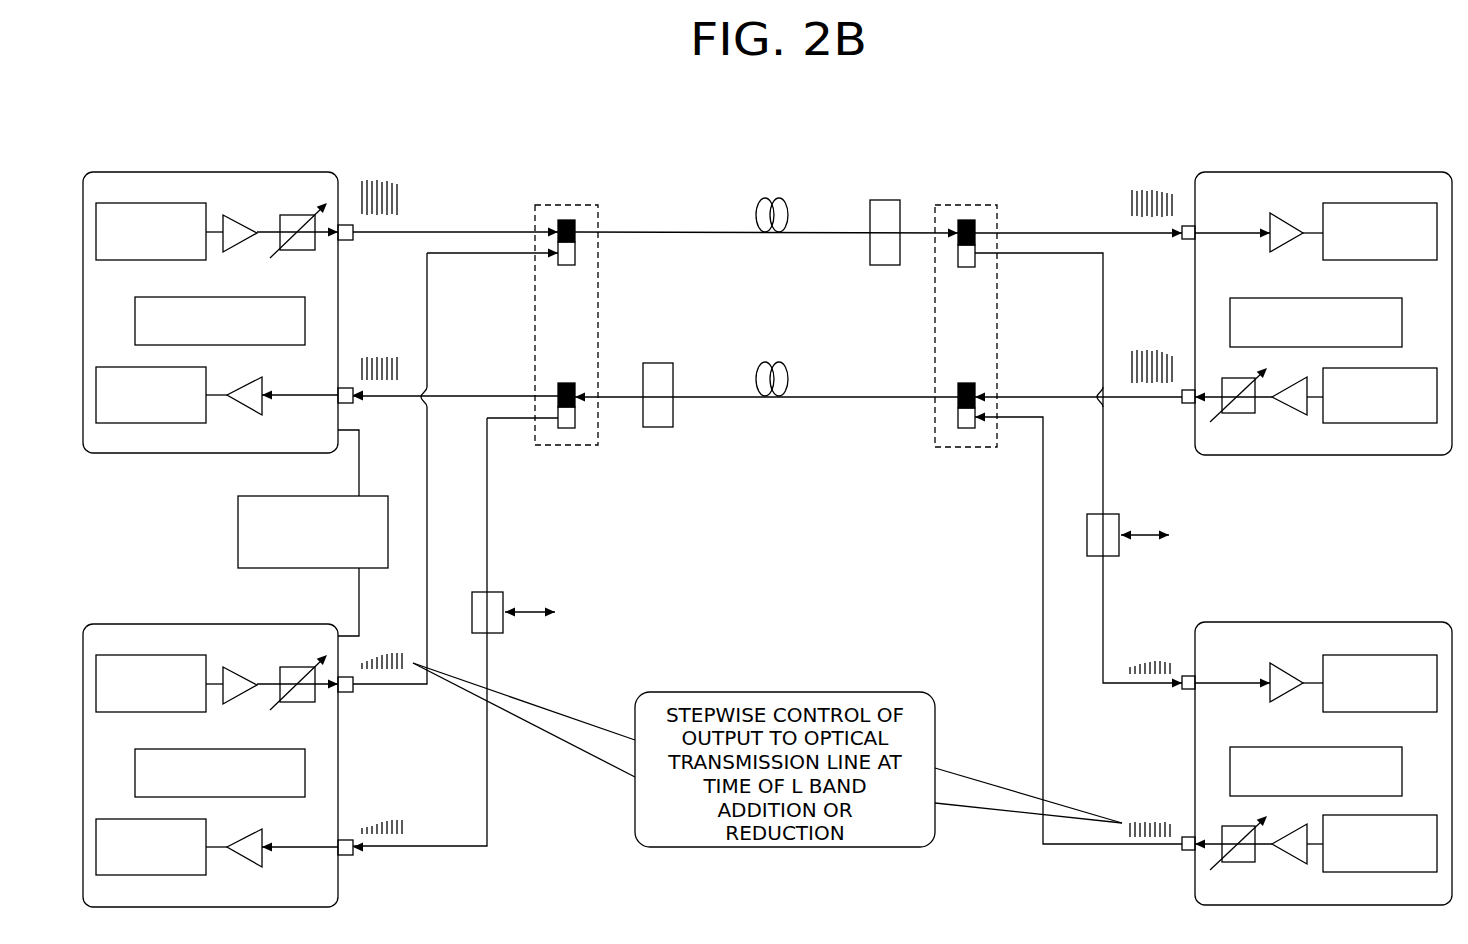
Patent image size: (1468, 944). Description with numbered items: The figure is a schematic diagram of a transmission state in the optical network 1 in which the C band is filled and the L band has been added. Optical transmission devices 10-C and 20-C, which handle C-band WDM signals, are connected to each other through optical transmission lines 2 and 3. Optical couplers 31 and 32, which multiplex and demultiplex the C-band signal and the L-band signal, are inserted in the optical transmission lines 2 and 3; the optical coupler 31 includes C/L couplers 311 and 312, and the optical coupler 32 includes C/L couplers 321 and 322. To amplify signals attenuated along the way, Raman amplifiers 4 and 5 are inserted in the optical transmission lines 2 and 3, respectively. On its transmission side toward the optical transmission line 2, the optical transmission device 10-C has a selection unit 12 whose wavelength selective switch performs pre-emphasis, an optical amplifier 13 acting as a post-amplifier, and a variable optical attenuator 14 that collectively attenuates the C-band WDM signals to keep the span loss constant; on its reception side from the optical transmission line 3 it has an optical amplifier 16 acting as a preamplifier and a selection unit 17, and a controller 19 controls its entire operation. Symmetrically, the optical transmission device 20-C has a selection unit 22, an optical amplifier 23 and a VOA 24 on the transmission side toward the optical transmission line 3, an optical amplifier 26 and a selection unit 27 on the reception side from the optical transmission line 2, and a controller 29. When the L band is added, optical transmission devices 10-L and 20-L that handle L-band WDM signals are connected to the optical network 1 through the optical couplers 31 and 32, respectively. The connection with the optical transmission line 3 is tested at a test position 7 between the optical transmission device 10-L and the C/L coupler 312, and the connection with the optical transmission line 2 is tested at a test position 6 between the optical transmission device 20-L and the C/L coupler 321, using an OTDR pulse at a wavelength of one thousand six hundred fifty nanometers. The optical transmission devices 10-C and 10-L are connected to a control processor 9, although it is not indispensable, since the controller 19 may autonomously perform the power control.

The optical network 1 is at (163, 69).
The optical transmission line 2 is at (686, 232).
The optical transmission line 3 is at (861, 397).
The Raman amplifier 4 is at (885, 200).
The Raman amplifier 5 is at (657, 363).
The test position 6 is at (1115, 514).
The test position 7 is at (500, 592).
The control processor 9 is at (238, 530).
The optical transmission device 10-C is at (120, 172).
The optical transmission device 10-L is at (223, 750).
The selection unit 12 is at (128, 203).
The optical amplifier 13 is at (228, 215).
The variable optical attenuator 14 is at (285, 250).
The optical amplifier 16 is at (250, 415).
The selection unit 17 is at (140, 423).
The controller 19 is at (160, 297).
The optical transmission device 20-C is at (1213, 172).
The optical transmission device 20-L is at (1317, 749).
The selection unit 22 is at (1350, 423).
The optical amplifier 23 is at (1280, 415).
The variable optical attenuator 24 is at (1225, 413).
The optical amplifier 26 is at (1271, 215).
The selection unit 27 is at (1350, 203).
The controller 29 is at (1345, 298).
The optical coupler 31 is at (565, 205).
The optical coupler 32 is at (968, 205).
The C/L coupler 311 is at (566, 265).
The C/L coupler 312 is at (566, 383).
The C/L coupler 321 is at (967, 267).
The C/L coupler 322 is at (967, 383).